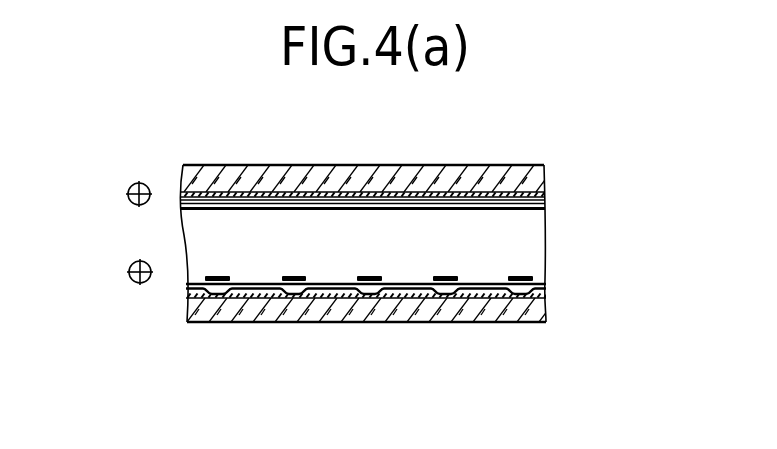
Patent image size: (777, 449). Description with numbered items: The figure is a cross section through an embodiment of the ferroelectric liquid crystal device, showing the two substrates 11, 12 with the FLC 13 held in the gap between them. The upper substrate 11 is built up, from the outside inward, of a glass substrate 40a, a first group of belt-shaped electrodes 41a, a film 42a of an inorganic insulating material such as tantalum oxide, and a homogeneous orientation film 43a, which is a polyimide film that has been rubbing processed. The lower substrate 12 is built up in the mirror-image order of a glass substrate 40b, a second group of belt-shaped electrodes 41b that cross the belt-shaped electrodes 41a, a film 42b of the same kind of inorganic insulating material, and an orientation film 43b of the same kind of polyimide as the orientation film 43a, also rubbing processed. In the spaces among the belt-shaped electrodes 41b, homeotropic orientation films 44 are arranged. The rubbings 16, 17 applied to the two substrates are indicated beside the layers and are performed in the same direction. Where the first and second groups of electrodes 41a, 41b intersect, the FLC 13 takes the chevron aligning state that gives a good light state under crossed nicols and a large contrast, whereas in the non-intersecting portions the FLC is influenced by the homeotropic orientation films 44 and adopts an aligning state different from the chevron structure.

The substrate 11 is at (460, 171).
The substrate 12 is at (464, 342).
The FLC 13 is at (389, 248).
The rubbing 16 is at (128, 194).
The rubbing 17 is at (129, 273).
The glass substrate 40a is at (517, 192).
The first group of belt-shaped electrodes 41a is at (543, 171).
The film of inorganic insulating material 42a is at (545, 202).
The homogeneous orientation film 43a is at (422, 228).
The homeotropic orientation films 44 is at (546, 276).
The orientation film 43b is at (546, 293).
The film of inorganic insulating material 42b is at (512, 292).
The second group of belt-shaped electrodes 41b is at (490, 294).
The glass substrate 40b is at (428, 362).